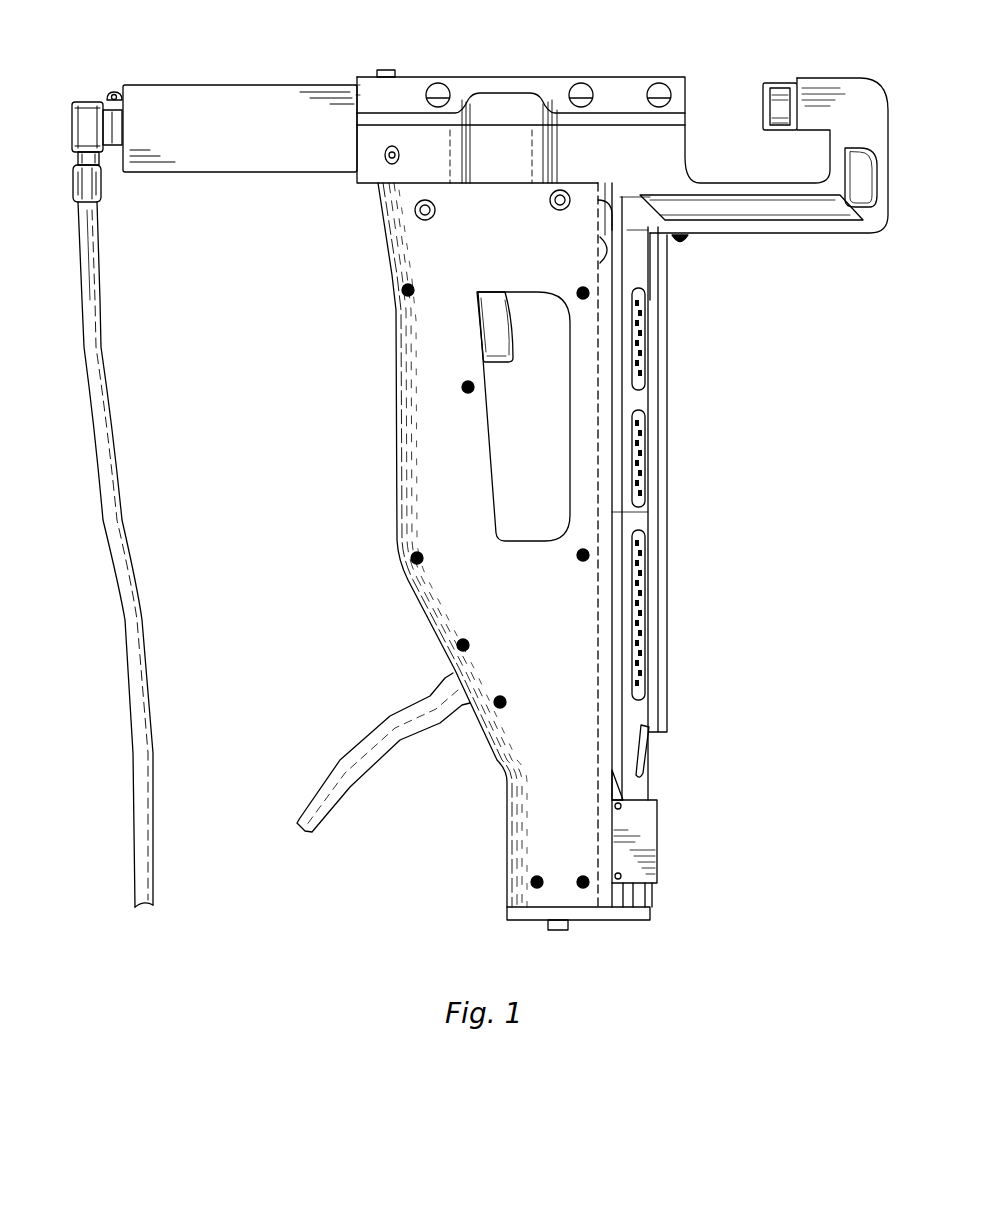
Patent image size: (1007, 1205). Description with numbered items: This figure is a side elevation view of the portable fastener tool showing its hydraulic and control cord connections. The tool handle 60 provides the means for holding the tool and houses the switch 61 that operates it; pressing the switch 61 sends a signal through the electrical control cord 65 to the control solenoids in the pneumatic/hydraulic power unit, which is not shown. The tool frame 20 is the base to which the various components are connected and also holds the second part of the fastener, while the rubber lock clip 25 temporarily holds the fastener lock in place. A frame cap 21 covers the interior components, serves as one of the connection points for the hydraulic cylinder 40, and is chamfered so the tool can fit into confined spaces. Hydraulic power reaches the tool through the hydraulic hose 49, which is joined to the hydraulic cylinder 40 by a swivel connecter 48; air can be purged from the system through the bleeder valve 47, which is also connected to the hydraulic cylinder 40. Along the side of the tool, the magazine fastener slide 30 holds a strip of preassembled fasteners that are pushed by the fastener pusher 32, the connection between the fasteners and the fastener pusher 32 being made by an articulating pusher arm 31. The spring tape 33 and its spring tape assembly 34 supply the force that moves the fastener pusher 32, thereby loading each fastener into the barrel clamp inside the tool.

The tool frame 20 is at (830, 200).
The frame cap 21 is at (553, 83).
The rubber lock clip 25 is at (778, 95).
The magazine fastener slide 30 is at (668, 423).
The articulating pusher arm 31 is at (640, 750).
The fastener pusher 32 is at (647, 820).
The spring tape 33 is at (612, 515).
The spring tape assembly 34 is at (617, 250).
The hydraulic cylinder 40 is at (275, 115).
The bleeder valve 47 is at (117, 100).
The swivel connecter 48 is at (85, 125).
The hydraulic hose 49 is at (92, 358).
The tool handle 60 is at (443, 490).
The switch 61 is at (488, 333).
The electrical control cord 65 is at (395, 723).